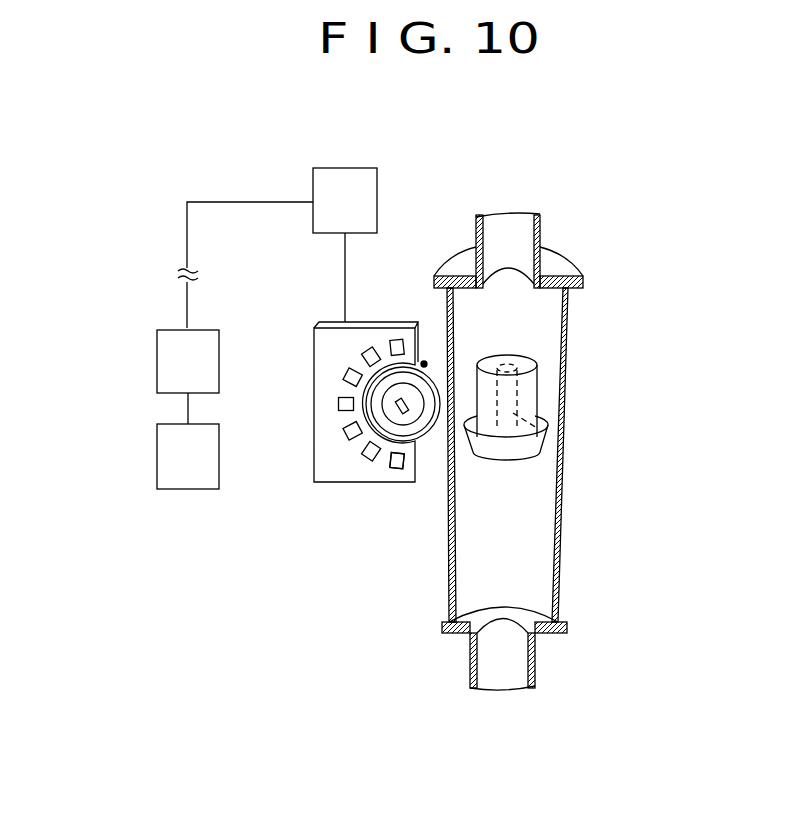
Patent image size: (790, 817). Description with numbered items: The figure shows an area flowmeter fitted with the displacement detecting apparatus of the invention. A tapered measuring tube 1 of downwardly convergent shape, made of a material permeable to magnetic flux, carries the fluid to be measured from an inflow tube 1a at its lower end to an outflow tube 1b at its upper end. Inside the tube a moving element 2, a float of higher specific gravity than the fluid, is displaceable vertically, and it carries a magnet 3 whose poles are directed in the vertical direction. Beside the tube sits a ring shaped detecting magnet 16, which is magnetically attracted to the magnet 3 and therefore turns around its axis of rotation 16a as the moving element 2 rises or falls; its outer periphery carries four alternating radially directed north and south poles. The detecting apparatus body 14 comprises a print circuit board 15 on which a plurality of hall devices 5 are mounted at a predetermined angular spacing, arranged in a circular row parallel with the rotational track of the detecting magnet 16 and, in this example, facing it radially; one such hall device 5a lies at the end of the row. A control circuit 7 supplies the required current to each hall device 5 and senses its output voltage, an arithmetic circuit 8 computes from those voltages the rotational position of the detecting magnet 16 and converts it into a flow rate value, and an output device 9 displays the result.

The tapered measuring tube 1 is at (568, 327).
The inflow tube 1a is at (535, 663).
The outflow tube 1b is at (540, 222).
The moving element 2 is at (532, 395).
The magnet 3 is at (560, 446).
The hall devices 5 is at (381, 351).
The coil 5a is at (388, 462).
The control circuit 7 is at (332, 168).
The arithmetic circuit 8 is at (157, 365).
The output device 9 is at (157, 460).
The detecting apparatus body 14 is at (341, 406).
The print circuit board 15 is at (314, 432).
The ring shaped detecting magnet 16 is at (426, 363).
The axis of rotation 16a is at (410, 412).